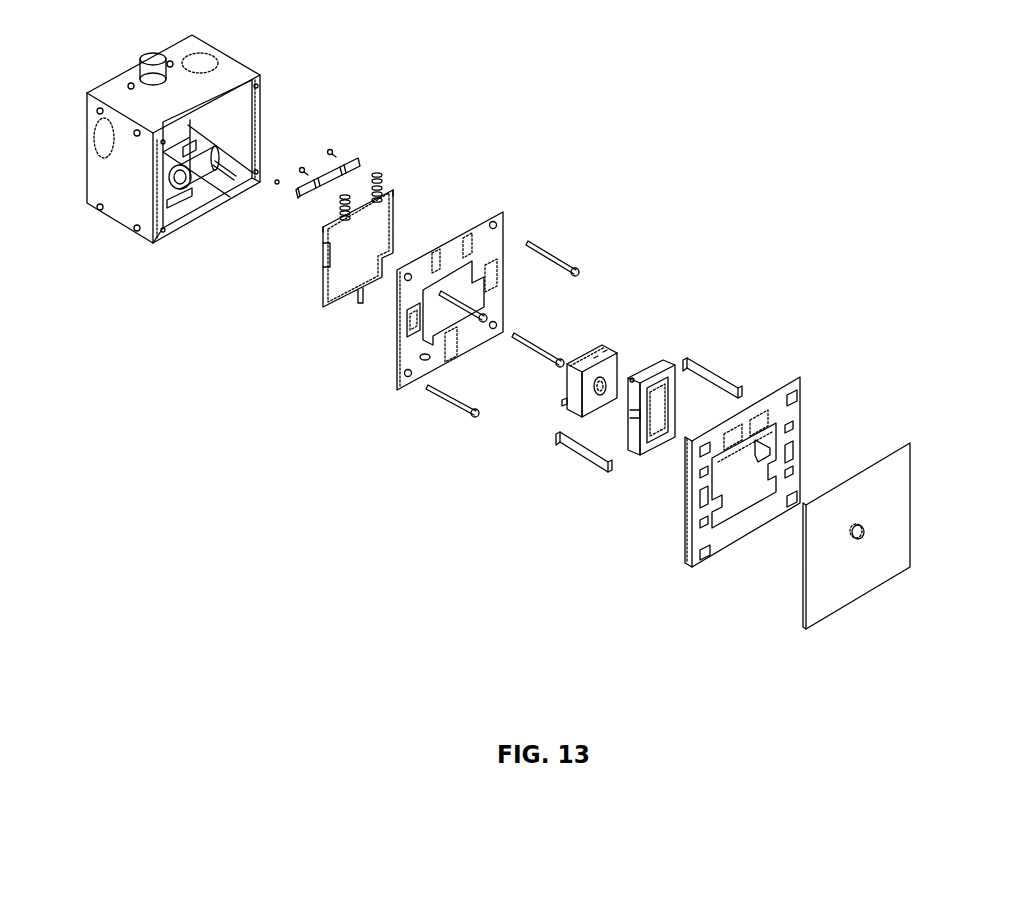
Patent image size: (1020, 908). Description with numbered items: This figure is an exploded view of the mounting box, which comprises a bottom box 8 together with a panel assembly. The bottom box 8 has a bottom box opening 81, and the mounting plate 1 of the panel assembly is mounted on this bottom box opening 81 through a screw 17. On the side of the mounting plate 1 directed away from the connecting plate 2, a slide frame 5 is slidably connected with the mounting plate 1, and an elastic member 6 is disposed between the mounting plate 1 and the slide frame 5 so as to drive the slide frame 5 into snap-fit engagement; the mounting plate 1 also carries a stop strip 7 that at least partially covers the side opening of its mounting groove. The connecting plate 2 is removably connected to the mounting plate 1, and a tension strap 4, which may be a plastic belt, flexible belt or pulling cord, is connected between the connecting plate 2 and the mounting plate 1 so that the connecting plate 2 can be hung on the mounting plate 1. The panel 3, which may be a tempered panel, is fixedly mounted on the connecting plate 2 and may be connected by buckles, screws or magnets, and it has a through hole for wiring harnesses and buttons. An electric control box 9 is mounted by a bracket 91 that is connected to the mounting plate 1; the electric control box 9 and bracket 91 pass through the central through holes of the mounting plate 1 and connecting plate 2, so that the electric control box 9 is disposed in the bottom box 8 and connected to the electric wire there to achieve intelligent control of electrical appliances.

The bottom box 8 is at (242, 63).
The bottom box opening 81 is at (172, 213).
The stop strip 7 is at (357, 163).
The elastic member 6 is at (381, 180).
The slide frame 5 is at (325, 272).
The mounting plate 1 is at (496, 209).
The screw 17 is at (553, 252).
The electric control box 9 is at (603, 352).
The bracket 91 is at (643, 458).
The tension strap 4 is at (723, 377).
The connecting plate 2 is at (786, 377).
The panel 3 is at (803, 604).